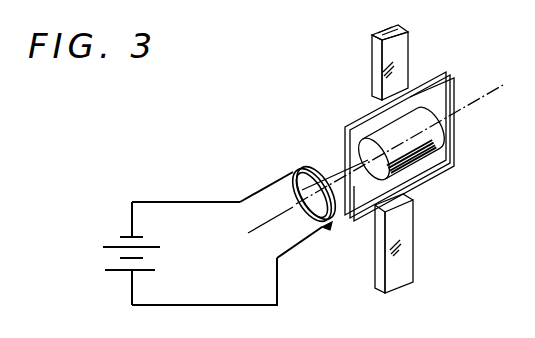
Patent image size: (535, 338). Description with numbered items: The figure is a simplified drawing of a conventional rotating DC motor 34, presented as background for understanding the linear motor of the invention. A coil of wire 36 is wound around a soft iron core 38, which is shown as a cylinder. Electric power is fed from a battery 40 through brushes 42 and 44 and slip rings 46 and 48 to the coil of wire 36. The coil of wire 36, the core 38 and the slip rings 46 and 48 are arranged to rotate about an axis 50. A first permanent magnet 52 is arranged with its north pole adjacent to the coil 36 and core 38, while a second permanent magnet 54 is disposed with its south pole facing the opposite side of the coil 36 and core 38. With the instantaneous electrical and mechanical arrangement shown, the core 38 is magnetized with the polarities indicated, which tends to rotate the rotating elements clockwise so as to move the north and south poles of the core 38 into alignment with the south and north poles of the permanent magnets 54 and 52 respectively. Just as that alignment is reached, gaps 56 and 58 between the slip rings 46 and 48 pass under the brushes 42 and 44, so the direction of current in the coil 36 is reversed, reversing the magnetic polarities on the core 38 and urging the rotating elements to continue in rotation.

The rotating DC motor 34 is at (481, 62).
The coil of wire 36 is at (456, 162).
The soft iron core 38 is at (441, 150).
The battery 40 is at (113, 251).
The brush 42 is at (302, 168).
The brush 44 is at (335, 227).
The slip ring 46 is at (290, 194).
The slip ring 48 is at (299, 241).
The axis 50 is at (492, 90).
The first permanent magnet 52 is at (409, 50).
The second permanent magnet 54 is at (414, 249).
The gap 56 is at (291, 226).
The gap 58 is at (330, 167).